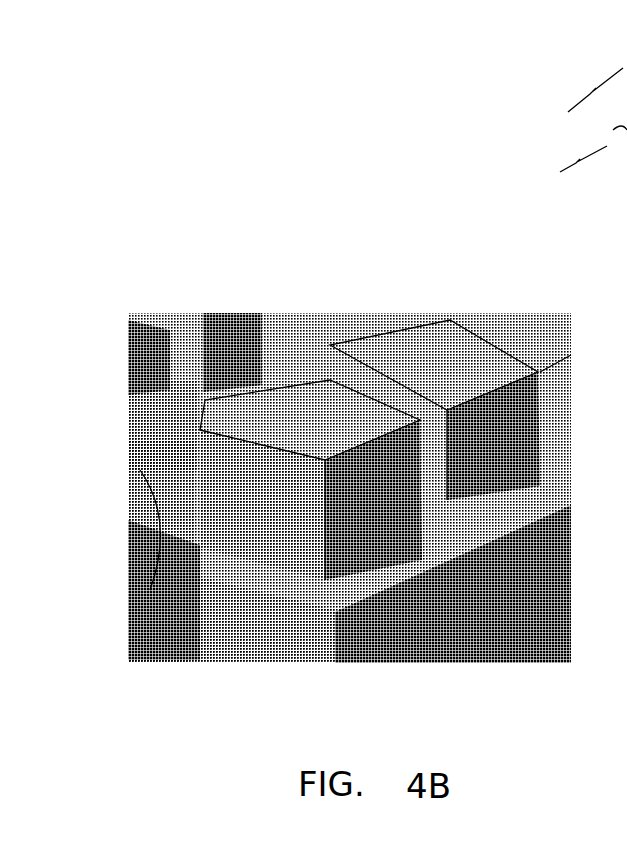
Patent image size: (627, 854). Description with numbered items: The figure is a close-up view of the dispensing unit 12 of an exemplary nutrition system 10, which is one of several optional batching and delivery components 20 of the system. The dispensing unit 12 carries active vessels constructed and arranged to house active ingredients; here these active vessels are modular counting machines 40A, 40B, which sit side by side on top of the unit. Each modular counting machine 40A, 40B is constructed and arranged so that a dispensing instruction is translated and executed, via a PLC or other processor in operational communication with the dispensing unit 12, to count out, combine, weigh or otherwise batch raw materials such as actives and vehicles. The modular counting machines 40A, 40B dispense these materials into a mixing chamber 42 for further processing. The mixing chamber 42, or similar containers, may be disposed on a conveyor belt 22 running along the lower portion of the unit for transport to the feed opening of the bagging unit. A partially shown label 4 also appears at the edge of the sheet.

The nutrition system 10 is at (0, 78).
The dispensing unit 12 is at (510, 316).
The batching and delivery components 20 is at (99, 294).
The conveyor belt 22 is at (127, 647).
The section 4 is at (94, 441).
The modular counting machine 40A is at (273, 317).
The modular counting machine 40B is at (373, 317).
The mixing chamber 42 is at (130, 477).